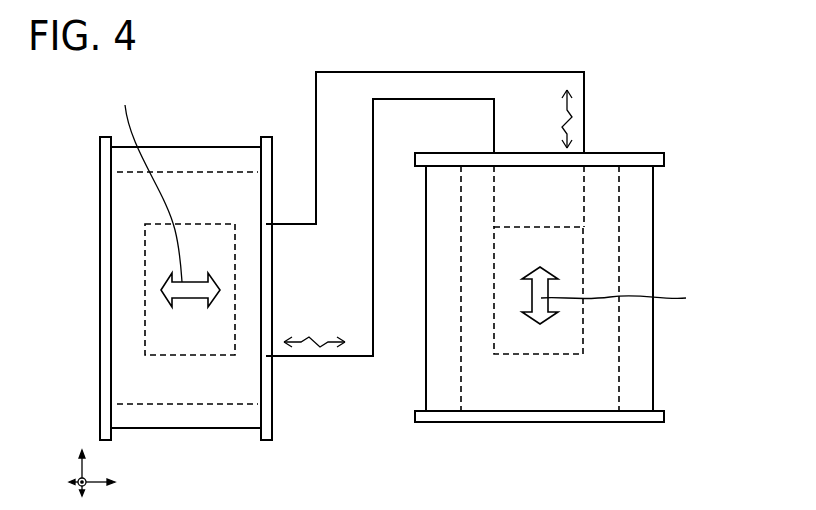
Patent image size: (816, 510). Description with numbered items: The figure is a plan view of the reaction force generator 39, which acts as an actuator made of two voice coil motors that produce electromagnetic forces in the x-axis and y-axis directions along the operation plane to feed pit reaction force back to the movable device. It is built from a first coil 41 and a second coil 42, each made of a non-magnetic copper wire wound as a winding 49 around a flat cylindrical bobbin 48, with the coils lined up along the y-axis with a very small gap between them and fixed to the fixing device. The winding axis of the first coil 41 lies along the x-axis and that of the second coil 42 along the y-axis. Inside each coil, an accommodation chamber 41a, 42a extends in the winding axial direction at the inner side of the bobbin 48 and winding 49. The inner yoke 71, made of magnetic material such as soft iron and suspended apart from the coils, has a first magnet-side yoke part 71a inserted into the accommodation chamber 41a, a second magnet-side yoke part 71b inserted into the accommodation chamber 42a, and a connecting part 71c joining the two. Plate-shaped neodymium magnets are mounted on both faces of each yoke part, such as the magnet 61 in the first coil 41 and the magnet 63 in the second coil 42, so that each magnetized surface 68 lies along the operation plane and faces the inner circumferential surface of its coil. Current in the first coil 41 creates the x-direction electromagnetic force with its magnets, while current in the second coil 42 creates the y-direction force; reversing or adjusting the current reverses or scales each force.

The reaction force generator 39 is at (608, 126).
The first coil 41 is at (653, 195).
The accommodation chamber 41a is at (617, 372).
The second coil 42 is at (190, 148).
The accommodation chamber 42a is at (128, 173).
The bobbin 48 is at (100, 155).
The winding 49 is at (425, 254).
The magnet 61 is at (583, 262).
The magnet 63 is at (145, 277).
The magnetized surface 68 is at (163, 322).
The inner yoke 71 is at (328, 358).
The first magnet-side yoke part 71a is at (585, 215).
The second magnet-side yoke part 71b is at (247, 356).
The connecting part 71c is at (362, 333).